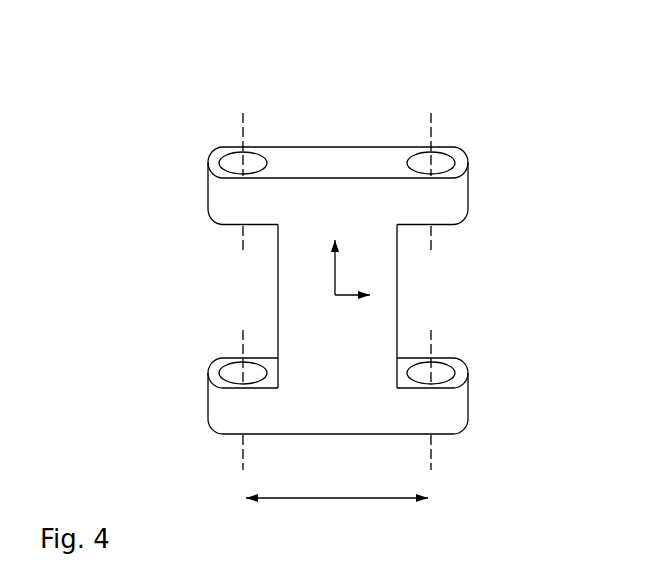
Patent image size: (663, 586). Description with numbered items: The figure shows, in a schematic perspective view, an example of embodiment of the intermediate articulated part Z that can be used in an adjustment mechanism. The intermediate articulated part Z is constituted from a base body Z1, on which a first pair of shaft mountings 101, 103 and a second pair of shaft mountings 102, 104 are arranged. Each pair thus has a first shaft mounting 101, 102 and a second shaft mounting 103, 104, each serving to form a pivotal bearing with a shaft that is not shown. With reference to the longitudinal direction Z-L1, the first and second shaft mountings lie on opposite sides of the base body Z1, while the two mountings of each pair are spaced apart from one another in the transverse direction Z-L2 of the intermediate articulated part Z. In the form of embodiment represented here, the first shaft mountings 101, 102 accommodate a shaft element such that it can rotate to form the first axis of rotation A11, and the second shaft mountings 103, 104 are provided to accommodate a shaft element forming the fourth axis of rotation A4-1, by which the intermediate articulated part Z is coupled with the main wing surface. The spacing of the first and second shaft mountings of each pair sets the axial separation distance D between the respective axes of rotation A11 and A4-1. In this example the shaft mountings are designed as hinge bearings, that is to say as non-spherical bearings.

The intermediate articulated part Z is at (353, 80).
The base body Z1 is at (380, 265).
The first shaft mounting 101 is at (252, 162).
The first shaft mounting 102 is at (232, 373).
The second shaft mounting 103 is at (443, 162).
The second shaft mounting 104 is at (442, 371).
The first axis of rotation A11 is at (243, 462).
The fourth axis of rotation A4-1 is at (431, 464).
The longitudinal direction Z-L1 is at (310, 267).
The transverse direction Z-L2 is at (346, 310).
The axial separation distance D is at (337, 487).